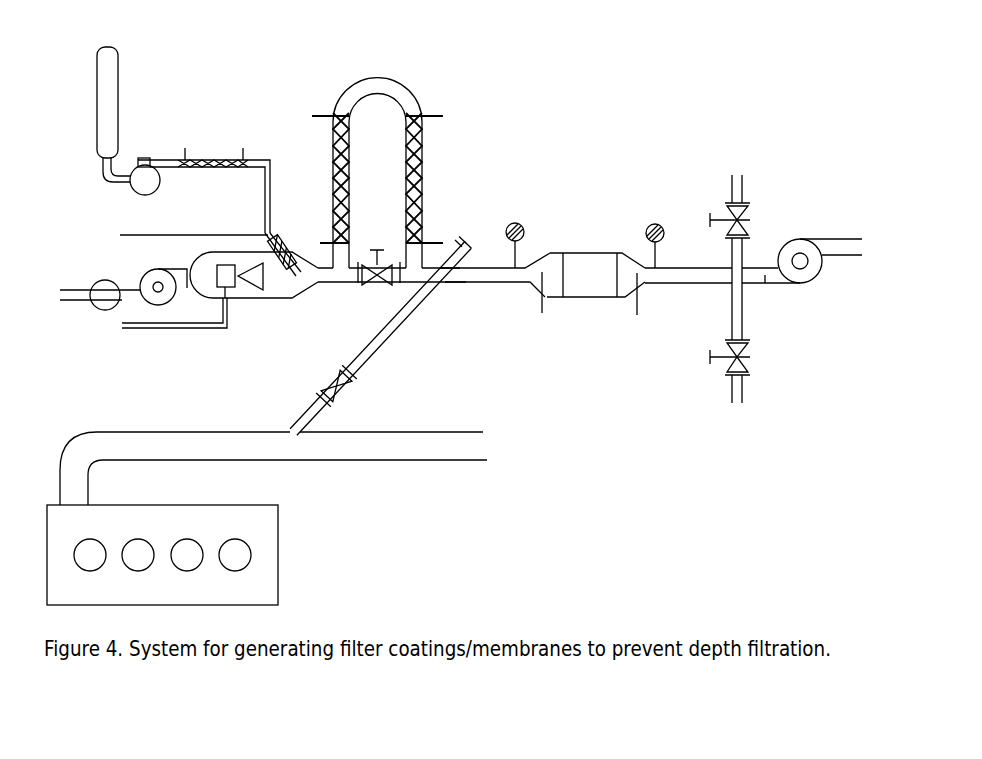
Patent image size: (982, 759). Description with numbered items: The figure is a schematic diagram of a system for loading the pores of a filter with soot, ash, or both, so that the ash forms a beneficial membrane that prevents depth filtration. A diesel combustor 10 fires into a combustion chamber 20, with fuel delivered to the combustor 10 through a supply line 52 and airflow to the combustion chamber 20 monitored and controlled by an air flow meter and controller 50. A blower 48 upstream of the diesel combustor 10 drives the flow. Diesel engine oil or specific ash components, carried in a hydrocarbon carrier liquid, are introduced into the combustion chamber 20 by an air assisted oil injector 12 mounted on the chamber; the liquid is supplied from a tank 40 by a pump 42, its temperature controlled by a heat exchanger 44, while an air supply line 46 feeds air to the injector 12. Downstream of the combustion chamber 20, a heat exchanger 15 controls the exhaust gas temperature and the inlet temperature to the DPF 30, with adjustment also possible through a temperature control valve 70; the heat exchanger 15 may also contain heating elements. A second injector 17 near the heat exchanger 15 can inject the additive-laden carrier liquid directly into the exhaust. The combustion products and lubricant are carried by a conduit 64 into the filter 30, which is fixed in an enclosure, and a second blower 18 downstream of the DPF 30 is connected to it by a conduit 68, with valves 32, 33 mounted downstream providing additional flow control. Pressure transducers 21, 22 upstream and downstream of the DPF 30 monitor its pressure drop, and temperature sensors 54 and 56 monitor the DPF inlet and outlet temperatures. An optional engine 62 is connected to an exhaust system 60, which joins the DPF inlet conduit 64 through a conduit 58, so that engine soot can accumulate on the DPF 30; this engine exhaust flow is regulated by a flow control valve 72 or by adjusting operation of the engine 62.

The diesel combustor 10 is at (244, 291).
The air assisted oil injector 12 is at (289, 231).
The heat exchanger 15 is at (421, 84).
The second injector 17 is at (470, 232).
The second blower 18 is at (799, 231).
The combustion chamber 20 is at (313, 296).
The pressure transducer 21 is at (513, 214).
The pressure transducer 22 is at (657, 213).
The DPF 30 is at (587, 243).
The valve 32 is at (753, 220).
The valve 33 is at (756, 355).
The tank 40 is at (122, 89).
The pump 42 is at (153, 152).
The heat exchanger 44 is at (229, 141).
The air supply line 46 is at (147, 228).
The blower 48 is at (144, 266).
The air flow meter and controller 50 is at (99, 316).
The supply line 52 is at (190, 342).
The temperature sensor 54 is at (531, 307).
The temperature sensor 56 is at (626, 306).
The conduit 58 is at (378, 368).
The exhaust system 60 is at (242, 426).
The engine 62 is at (291, 546).
The conduit 64 is at (466, 298).
The conduit 68 is at (699, 288).
The temperature control valve 70 is at (377, 236).
The flow control valve 72 is at (316, 379).